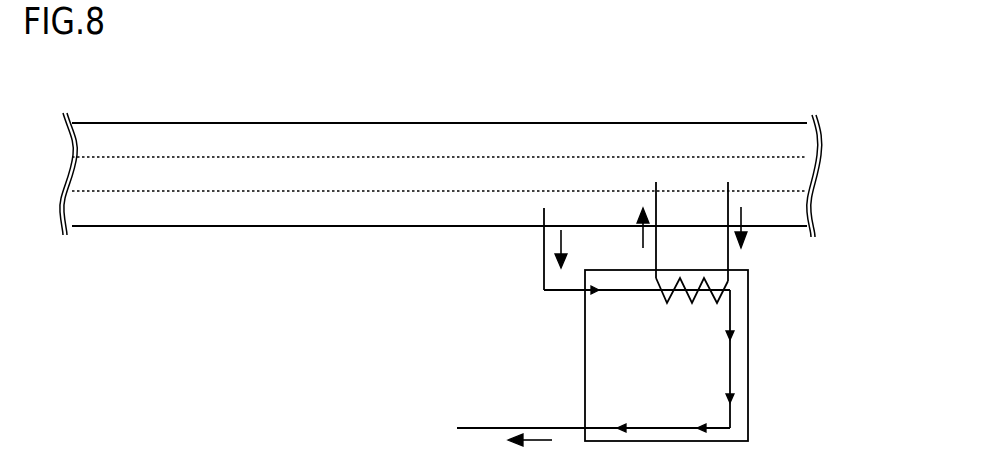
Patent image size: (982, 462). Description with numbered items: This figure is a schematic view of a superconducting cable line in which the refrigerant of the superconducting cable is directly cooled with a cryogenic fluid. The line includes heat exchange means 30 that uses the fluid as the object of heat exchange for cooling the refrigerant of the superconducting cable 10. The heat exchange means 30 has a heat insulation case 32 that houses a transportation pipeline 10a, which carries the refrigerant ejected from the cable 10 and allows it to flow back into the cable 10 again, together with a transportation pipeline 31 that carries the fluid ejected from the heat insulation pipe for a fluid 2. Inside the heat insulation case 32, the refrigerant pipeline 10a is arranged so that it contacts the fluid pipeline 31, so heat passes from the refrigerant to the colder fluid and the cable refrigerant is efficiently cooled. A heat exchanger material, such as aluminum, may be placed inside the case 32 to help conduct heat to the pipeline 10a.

The heat insulation pipe for a fluid 2 is at (178, 122).
The superconducting cable 10 is at (672, 158).
The transportation pipeline for the refrigerant 10a is at (728, 252).
The heat exchange means 30 is at (749, 331).
The transportation pipeline for the fluid 31 is at (731, 417).
The heat insulation case 32 is at (748, 367).